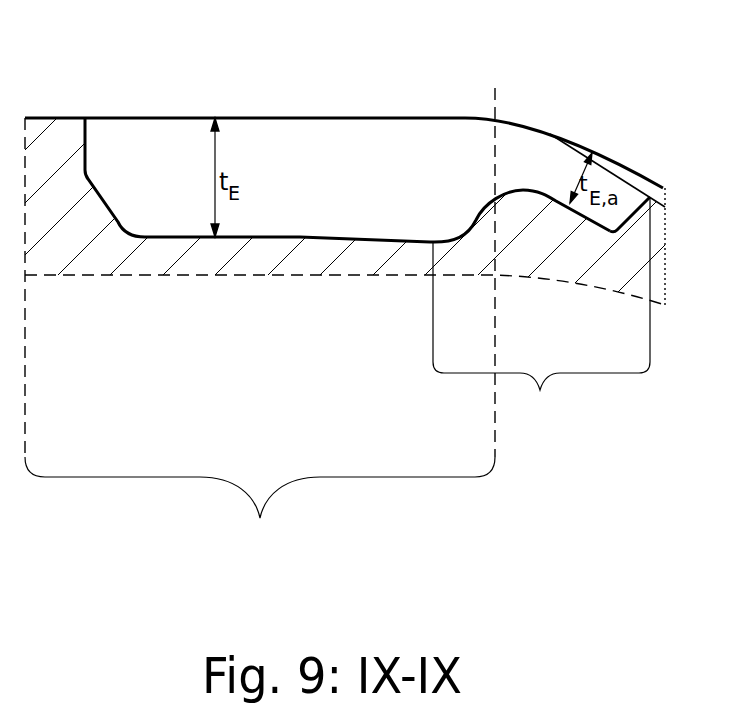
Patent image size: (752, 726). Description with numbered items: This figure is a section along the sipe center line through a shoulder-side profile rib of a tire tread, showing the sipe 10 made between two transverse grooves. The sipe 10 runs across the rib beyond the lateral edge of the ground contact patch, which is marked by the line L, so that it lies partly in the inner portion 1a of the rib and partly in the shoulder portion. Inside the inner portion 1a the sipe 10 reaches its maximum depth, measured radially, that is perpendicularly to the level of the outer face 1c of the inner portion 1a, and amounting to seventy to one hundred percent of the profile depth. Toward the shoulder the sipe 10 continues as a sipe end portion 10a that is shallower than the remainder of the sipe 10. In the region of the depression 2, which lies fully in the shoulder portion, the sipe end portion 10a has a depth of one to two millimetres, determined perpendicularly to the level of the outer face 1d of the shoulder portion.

The inner portion 1a is at (260, 505).
The outer face 1c is at (157, 118).
The outer face 1d is at (640, 168).
The depression 2 is at (645, 165).
The sipe 10 is at (247, 163).
The sipe end portion 10a is at (541, 311).
The line L is at (494, 257).